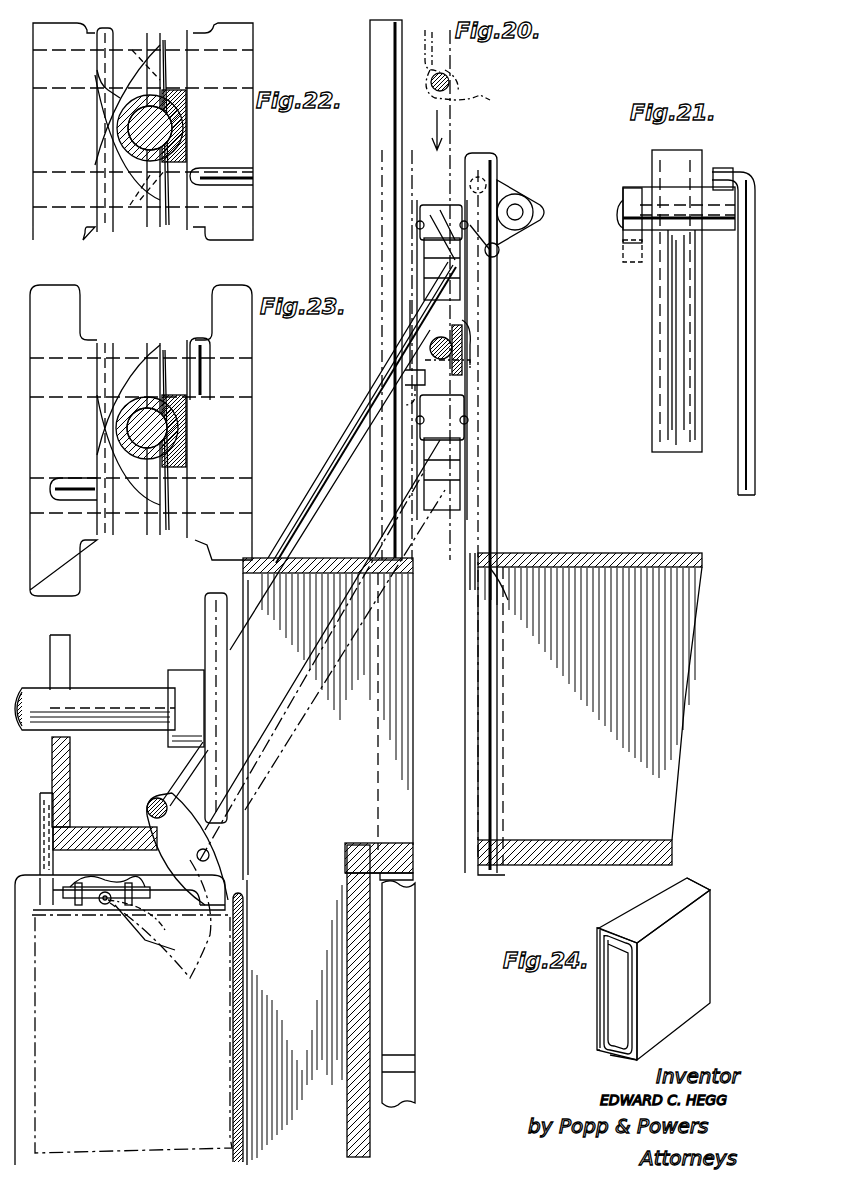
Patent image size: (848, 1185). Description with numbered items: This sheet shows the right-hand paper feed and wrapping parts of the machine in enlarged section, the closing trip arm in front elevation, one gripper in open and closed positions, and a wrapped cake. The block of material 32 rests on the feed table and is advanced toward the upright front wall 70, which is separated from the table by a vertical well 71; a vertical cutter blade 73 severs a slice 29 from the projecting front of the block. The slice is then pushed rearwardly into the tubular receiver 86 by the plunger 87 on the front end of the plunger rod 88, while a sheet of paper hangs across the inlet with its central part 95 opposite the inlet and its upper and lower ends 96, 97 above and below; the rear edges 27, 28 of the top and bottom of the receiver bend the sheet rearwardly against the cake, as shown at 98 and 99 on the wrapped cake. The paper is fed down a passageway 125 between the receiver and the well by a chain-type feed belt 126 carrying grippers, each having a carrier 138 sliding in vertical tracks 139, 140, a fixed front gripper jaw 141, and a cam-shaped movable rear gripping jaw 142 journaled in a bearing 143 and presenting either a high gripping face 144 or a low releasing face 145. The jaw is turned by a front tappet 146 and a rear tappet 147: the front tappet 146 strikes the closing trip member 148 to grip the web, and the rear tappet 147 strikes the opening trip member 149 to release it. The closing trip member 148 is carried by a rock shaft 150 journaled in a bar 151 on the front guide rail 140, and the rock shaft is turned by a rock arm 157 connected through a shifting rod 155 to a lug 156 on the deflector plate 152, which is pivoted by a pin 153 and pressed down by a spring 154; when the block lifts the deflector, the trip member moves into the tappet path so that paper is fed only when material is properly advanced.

In FIG. 22, the carrier 138 is at (253, 60).
In FIG. 23, the carrier 138 is at (141, 440).
In FIG. 22, the rear tappet 147 is at (98, 44).
In FIG. 23, the rear tappet 147 is at (68, 500).
In FIG. 22, the front tappet 146 is at (254, 176).
In FIG. 23, the front tappet 146 is at (205, 345).
In FIG. 22, the low releasing face 145 is at (122, 112).
In FIG. 23, the low releasing face 145 is at (175, 415).
In FIG. 22, the high gripping face 144 is at (115, 122).
In FIG. 23, the high gripping face 144 is at (178, 460).
In FIG. 22, the bearing 143 is at (130, 150).
In FIG. 23, the bearing 143 is at (122, 428).
In FIG. 22, the movable rear gripping jaw 142 is at (130, 138).
In FIG. 23, the movable rear gripping jaw 142 is at (128, 440).
In FIG. 20, the movable rear gripping jaw 142 is at (430, 348).
In FIG. 22, the fixed front gripper jaw 141 is at (188, 140).
In FIG. 23, the fixed front gripper jaw 141 is at (188, 445).
In FIG. 20, the fixed front gripper jaw 141 is at (463, 352).
In FIG. 21, the front guide rail 140 is at (678, 452).
In FIG. 20, the front guide rail 140 is at (498, 312).
In FIG. 20, the vertical track 139 is at (370, 198).
In FIG. 21, the rock shaft 150 is at (618, 210).
In FIG. 20, the rock shaft 150 is at (516, 210).
In FIG. 21, the closing trip member 148 is at (625, 240).
In FIG. 20, the closing trip member 148 is at (497, 250).
In FIG. 21, the bar 151 is at (650, 187).
In FIG. 21, the rock arm 157 is at (723, 168).
In FIG. 21, the shifting rod 155 is at (738, 486).
In FIG. 20, the shifting rod 155 is at (325, 485).
In FIG. 20, the feed belt 126 is at (438, 505).
In FIG. 20, the passageway 125 is at (347, 719).
In FIG. 20, the tubular receiver 86 is at (590, 709).
In FIG. 20, the lower end of sheet 97 is at (480, 545).
In FIG. 24, the lower end of sheet 97 is at (599, 1040).
In FIG. 20, the rear edge of receiver top 27 is at (505, 590).
In FIG. 20, the rear edge of receiver bottom 28 is at (495, 868).
In FIG. 20, the plunger 87 is at (206, 632).
In FIG. 20, the plunger rod 88 is at (103, 688).
In FIG. 20, the lug 156 is at (147, 808).
In FIG. 20, the spring 154 is at (118, 885).
In FIG. 20, the deflector plate 152 is at (160, 905).
In FIG. 20, the pin 153 is at (103, 905).
In FIG. 20, the block of material 32 is at (35, 1052).
In FIG. 20, the cutter blade 73 is at (246, 978).
In FIG. 20, the vertical well 71 is at (297, 1022).
In FIG. 20, the front wall 70 is at (352, 996).
In FIG. 20, the opening trip member 149 is at (410, 1063).
In FIG. 24, the central part of sheet 95 is at (700, 960).
In FIG. 24, the upper end of sheet 96 is at (597, 1003).
In FIG. 24, the slice 29 is at (625, 992).
In FIG. 24, the bent upper sheet part 98 is at (708, 880).
In FIG. 24, the bent lower sheet part 99 is at (626, 1056).